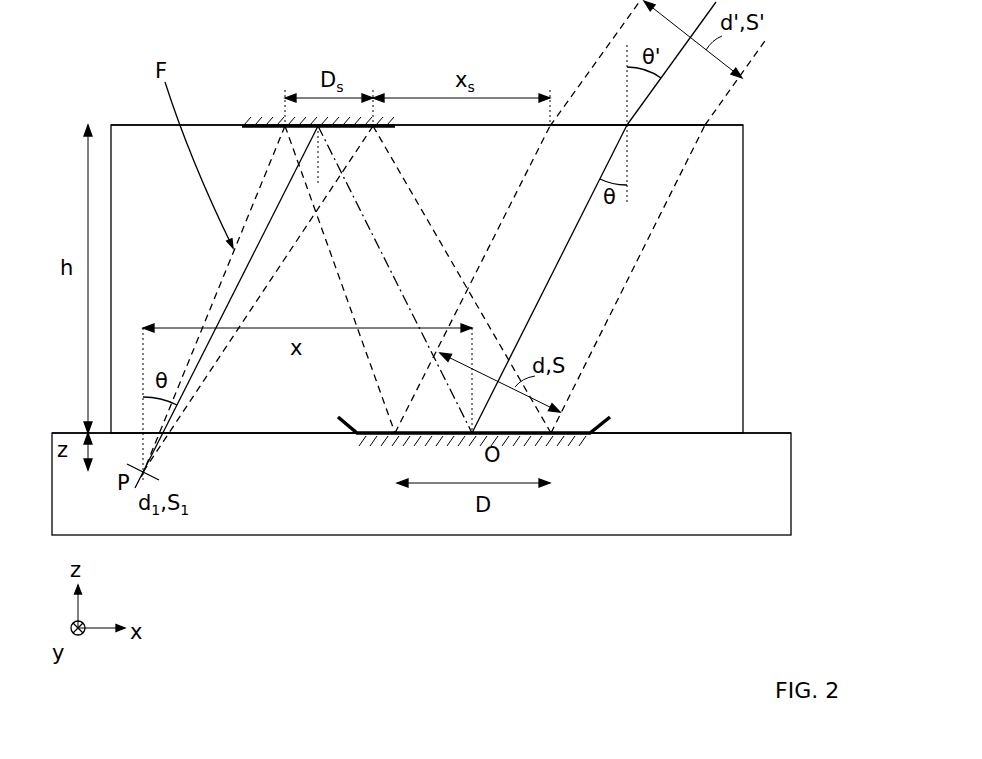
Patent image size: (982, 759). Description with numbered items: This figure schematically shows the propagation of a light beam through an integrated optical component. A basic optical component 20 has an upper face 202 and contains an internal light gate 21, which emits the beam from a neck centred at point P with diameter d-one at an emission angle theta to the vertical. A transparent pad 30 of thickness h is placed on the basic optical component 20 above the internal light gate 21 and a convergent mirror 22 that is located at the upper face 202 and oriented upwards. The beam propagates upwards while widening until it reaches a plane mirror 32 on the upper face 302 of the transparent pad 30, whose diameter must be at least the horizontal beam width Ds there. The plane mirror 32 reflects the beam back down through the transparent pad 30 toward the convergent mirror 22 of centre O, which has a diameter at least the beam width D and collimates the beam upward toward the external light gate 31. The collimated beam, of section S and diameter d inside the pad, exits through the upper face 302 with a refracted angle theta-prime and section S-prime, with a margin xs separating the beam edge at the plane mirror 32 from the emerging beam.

The basic optical component 20 is at (805, 485).
The upper face 202 is at (770, 432).
The internal light gate 21 is at (138, 478).
The convergent mirror 22 is at (460, 445).
The transparent pad 30 is at (748, 270).
The upper face 302 is at (718, 125).
The external light gate 31 is at (588, 122).
The plane mirror 32 is at (274, 115).